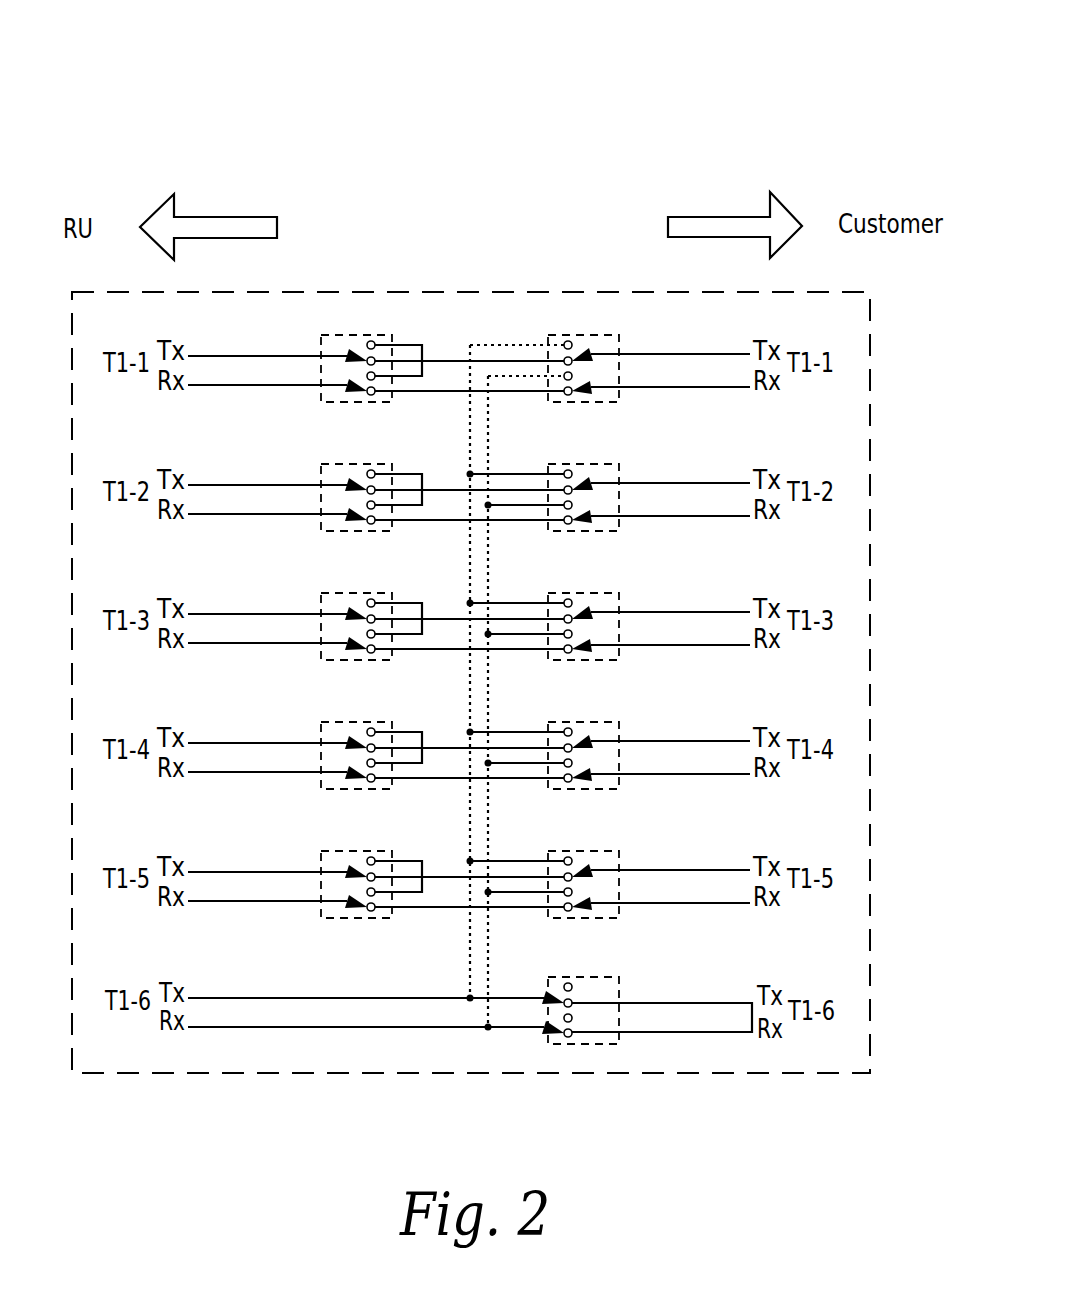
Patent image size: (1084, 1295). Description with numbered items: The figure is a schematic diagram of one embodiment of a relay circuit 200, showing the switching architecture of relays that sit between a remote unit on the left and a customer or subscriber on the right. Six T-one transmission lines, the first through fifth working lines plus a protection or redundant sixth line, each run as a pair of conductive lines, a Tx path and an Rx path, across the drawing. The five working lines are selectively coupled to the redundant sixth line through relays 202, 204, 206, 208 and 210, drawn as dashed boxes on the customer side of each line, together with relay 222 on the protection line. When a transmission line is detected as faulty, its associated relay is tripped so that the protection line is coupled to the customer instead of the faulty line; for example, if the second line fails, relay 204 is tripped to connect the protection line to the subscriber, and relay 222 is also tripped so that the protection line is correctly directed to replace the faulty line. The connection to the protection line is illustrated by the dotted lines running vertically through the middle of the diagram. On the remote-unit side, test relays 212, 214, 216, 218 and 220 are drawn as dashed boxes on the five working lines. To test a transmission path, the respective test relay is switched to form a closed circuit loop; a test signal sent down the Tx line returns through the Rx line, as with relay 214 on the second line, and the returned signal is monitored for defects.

The relay circuit 200 is at (584, 86).
The relay 202 is at (617, 348).
The relay 204 is at (617, 477).
The relay 206 is at (617, 606).
The relay 208 is at (617, 735).
The relay 210 is at (617, 864).
The test relay 212 is at (320, 348).
The test relay 214 is at (320, 477).
The test relay 216 is at (320, 606).
The test relay 218 is at (320, 735).
The test relay 220 is at (320, 864).
The relay 222 is at (619, 990).